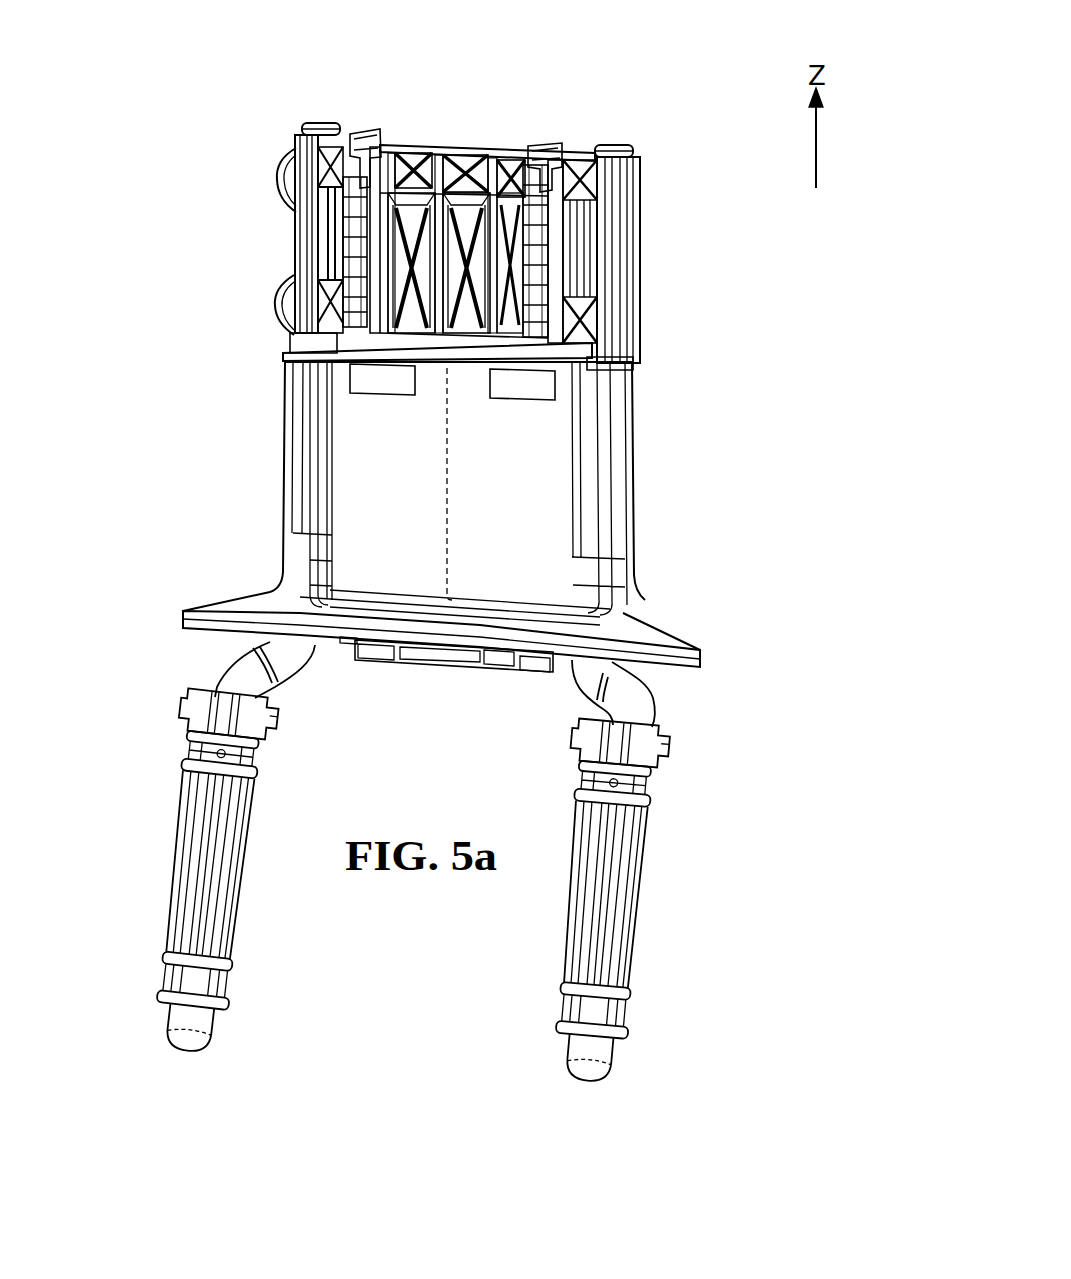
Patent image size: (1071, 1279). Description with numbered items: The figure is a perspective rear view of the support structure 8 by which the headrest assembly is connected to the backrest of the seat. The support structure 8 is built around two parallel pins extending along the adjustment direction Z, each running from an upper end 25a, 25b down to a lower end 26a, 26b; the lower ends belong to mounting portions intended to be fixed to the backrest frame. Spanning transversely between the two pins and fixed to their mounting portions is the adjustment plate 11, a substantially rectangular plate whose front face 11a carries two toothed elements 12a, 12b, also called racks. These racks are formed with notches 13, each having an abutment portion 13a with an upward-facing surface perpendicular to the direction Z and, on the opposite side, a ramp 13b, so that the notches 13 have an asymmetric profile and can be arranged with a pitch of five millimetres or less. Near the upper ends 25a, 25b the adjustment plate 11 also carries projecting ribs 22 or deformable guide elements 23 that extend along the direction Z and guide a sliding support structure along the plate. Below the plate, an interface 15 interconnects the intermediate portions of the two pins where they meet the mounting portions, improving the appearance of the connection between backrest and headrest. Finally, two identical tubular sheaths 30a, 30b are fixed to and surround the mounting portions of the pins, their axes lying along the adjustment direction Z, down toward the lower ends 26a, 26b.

The support structure 8 is at (683, 122).
The adjustment plate 11 is at (484, 152).
The front face 11a is at (421, 158).
The toothed element 12a is at (371, 130).
The toothed element 12b is at (553, 148).
The notches 13 is at (360, 262).
The abutment portion 13a is at (546, 302).
The ramp 13b is at (546, 326).
The interface 15 is at (612, 500).
The ribs 22 is at (622, 216).
The deformable guide elements 23 is at (280, 184).
The upper end 25a is at (316, 124).
The upper end 25b is at (620, 146).
The lower end 26a is at (184, 1052).
The lower end 26b is at (587, 1084).
The sheath 30a is at (180, 873).
The sheath 30b is at (630, 915).